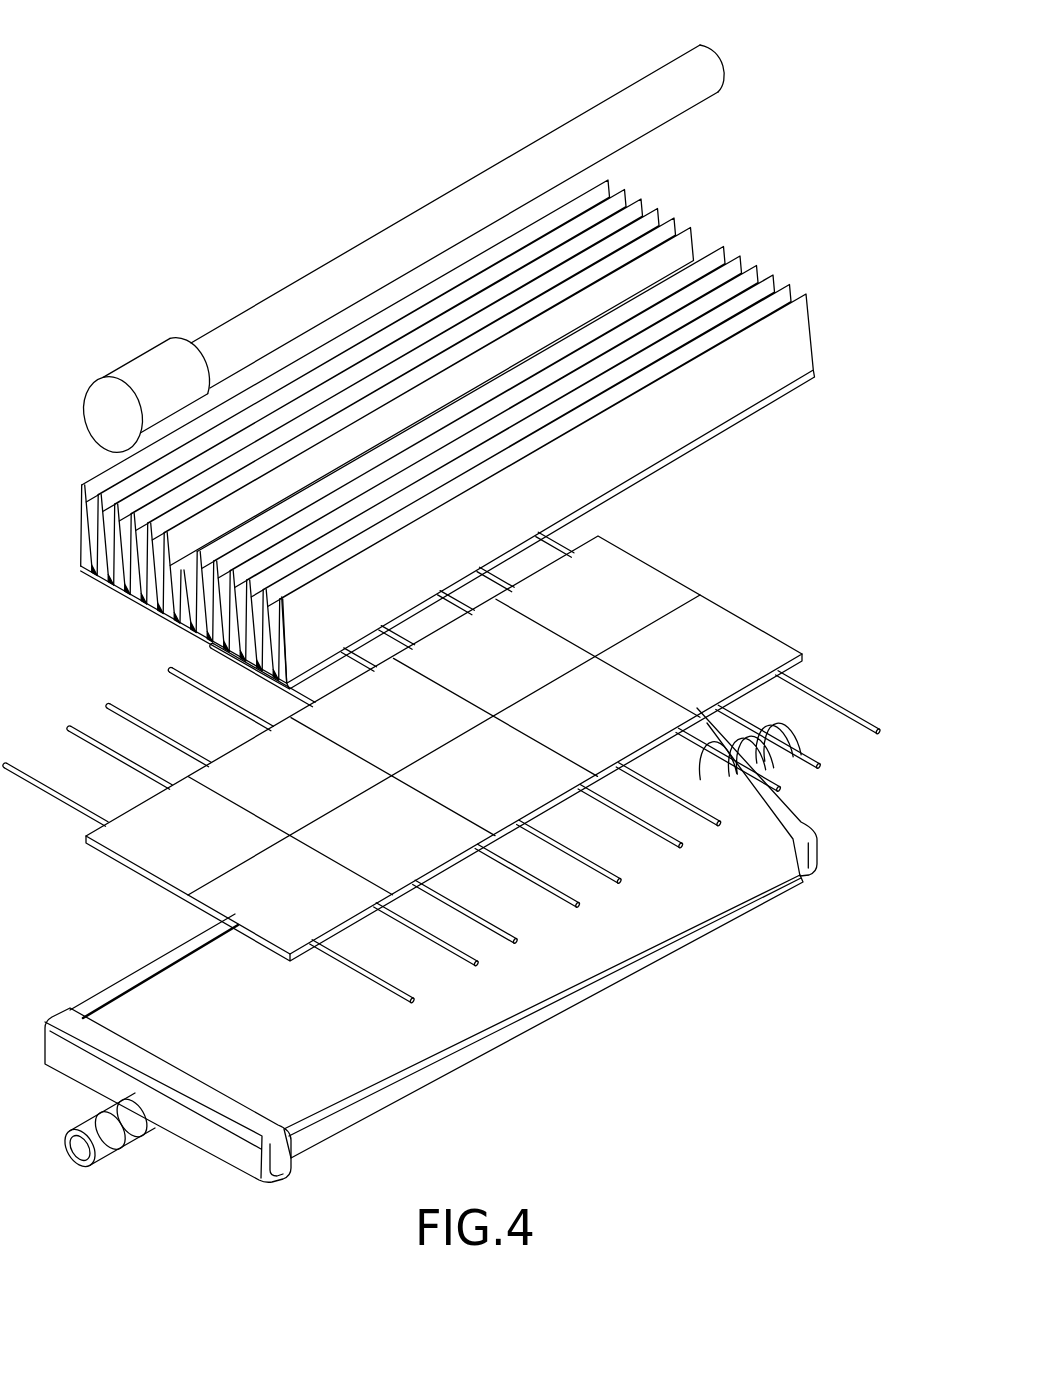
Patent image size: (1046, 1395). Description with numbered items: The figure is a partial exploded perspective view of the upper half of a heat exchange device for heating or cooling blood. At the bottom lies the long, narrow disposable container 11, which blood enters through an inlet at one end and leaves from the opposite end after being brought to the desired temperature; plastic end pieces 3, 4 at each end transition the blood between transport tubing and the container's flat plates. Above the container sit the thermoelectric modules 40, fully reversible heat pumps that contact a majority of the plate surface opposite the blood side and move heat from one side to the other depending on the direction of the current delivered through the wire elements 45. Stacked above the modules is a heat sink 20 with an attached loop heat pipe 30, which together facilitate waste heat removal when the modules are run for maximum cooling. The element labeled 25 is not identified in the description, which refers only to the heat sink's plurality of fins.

The plastic end piece 3 is at (198, 1135).
The plastic end piece 4 is at (786, 823).
The disposable container 11 is at (306, 1096).
The heat sink 20 is at (418, 427).
The fins 25 is at (113, 565).
The loop heat pipe 30 is at (583, 113).
The thermoelectric module 40 is at (497, 718).
The wire element 45 is at (550, 896).